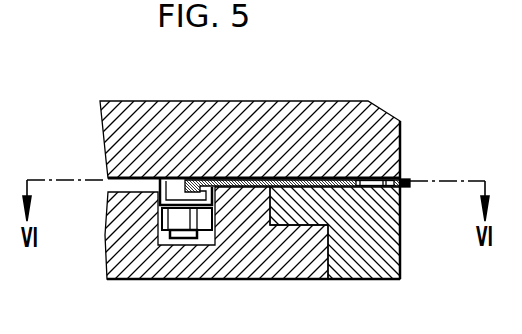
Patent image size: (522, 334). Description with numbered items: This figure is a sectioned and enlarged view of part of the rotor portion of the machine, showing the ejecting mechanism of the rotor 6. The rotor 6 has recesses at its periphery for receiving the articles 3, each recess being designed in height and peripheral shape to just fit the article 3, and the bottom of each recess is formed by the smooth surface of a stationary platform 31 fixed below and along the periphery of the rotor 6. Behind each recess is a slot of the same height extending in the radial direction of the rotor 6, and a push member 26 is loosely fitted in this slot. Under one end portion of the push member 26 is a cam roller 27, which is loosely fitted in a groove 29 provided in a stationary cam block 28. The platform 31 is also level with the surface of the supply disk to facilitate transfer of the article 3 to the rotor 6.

The rotor 6 is at (238, 110).
The push member 26 is at (317, 180).
The article 3 is at (379, 180).
The cam roller 27 is at (208, 214).
The groove 29 is at (210, 231).
The stationary cam block 28 is at (294, 267).
The stationary platform 31 is at (389, 276).